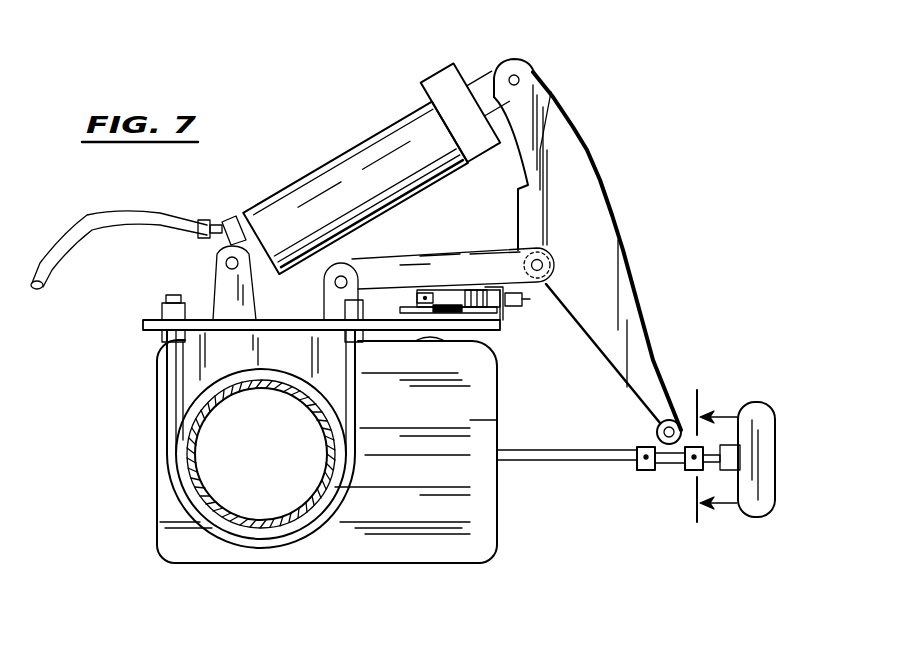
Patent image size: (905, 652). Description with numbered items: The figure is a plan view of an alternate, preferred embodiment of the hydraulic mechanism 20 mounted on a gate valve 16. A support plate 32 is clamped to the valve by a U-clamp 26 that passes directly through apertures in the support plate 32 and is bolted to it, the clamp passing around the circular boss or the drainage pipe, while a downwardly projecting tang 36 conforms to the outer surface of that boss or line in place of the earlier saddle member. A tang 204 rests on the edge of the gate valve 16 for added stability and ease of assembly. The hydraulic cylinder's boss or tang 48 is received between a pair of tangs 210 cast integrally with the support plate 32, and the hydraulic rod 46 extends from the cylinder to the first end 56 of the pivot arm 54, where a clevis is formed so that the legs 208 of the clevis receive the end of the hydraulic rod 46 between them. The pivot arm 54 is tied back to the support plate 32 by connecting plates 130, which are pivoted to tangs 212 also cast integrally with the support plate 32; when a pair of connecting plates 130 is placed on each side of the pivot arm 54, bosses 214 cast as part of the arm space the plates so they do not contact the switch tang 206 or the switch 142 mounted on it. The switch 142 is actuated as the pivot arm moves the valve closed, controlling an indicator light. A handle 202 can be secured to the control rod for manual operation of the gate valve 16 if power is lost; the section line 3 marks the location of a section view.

The section line 3- 3 is at (717, 462).
The gate valve 16 is at (478, 403).
The hydraulic mechanism 20 is at (660, 132).
The U-clamp 26 is at (175, 477).
The support plate 32 is at (143, 325).
The downwardly projecting tang 36 is at (218, 360).
The hydraulic rod 46 is at (482, 90).
The hydraulic cylinder boss (tang) 48 is at (240, 228).
The pivot arm 54 is at (584, 198).
The first end of pivot arm 56 is at (571, 132).
The connecting plate 130 is at (452, 290).
The switch 142 is at (445, 293).
The handle 202 is at (762, 447).
The tang 204 is at (480, 346).
The switch tang 206 is at (505, 330).
The legs of clevis 208 is at (549, 98).
The tang 210 is at (218, 280).
The tang 212 is at (326, 298).
The bosses 214 is at (553, 273).